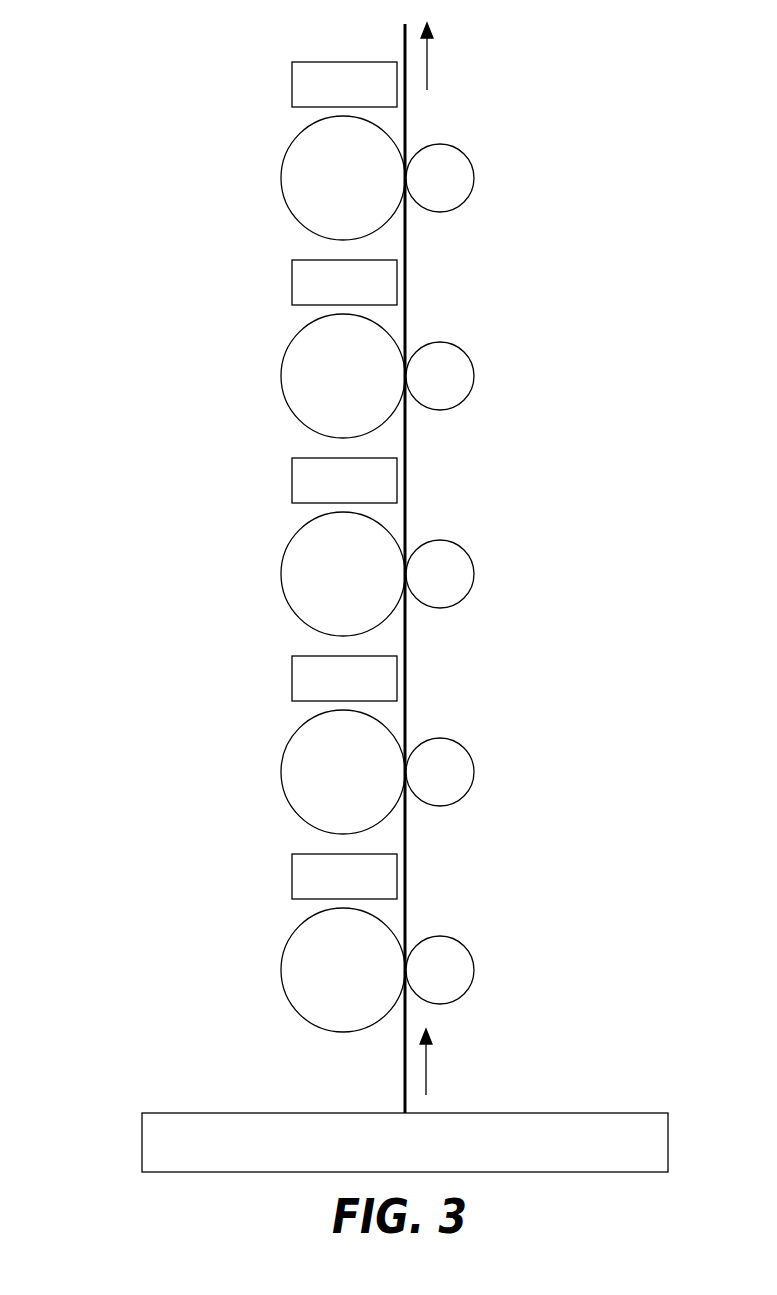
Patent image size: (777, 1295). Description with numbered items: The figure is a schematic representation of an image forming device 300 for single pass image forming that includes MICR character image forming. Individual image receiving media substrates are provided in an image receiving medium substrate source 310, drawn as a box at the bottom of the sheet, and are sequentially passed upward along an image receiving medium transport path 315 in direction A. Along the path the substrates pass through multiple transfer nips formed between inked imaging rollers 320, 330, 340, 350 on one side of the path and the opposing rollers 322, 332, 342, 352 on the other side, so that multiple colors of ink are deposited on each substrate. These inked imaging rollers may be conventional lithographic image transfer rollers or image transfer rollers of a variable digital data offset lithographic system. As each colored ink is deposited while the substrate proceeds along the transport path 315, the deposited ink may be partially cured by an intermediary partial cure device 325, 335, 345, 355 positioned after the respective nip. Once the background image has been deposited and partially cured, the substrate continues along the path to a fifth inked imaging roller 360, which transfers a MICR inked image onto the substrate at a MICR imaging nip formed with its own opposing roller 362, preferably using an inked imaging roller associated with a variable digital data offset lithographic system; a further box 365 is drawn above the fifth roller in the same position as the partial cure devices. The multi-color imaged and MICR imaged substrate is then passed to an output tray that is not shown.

The image forming device 300 is at (105, 40).
The image receiving medium substrate source 310 is at (207, 1112).
The image receiving medium transport path 315 is at (407, 117).
The inked imaging roller 320 is at (285, 949).
The opposing roller 322 is at (474, 970).
The intermediary partial cure device 325 is at (291, 878).
The inked imaging roller 330 is at (285, 751).
The opposing roller 332 is at (474, 772).
The intermediary partial cure device 335 is at (291, 680).
The inked imaging roller 340 is at (285, 553).
The opposing roller 342 is at (474, 574).
The intermediary partial cure device 345 is at (291, 482).
The inked imaging roller 350 is at (285, 355).
The opposing roller 352 is at (474, 376).
The intermediary partial cure device 355 is at (291, 284).
The fifth inked imaging roller 360 is at (285, 157).
The opposing roller 362 is at (474, 178).
The marking material applicator / print head 365 is at (291, 86).